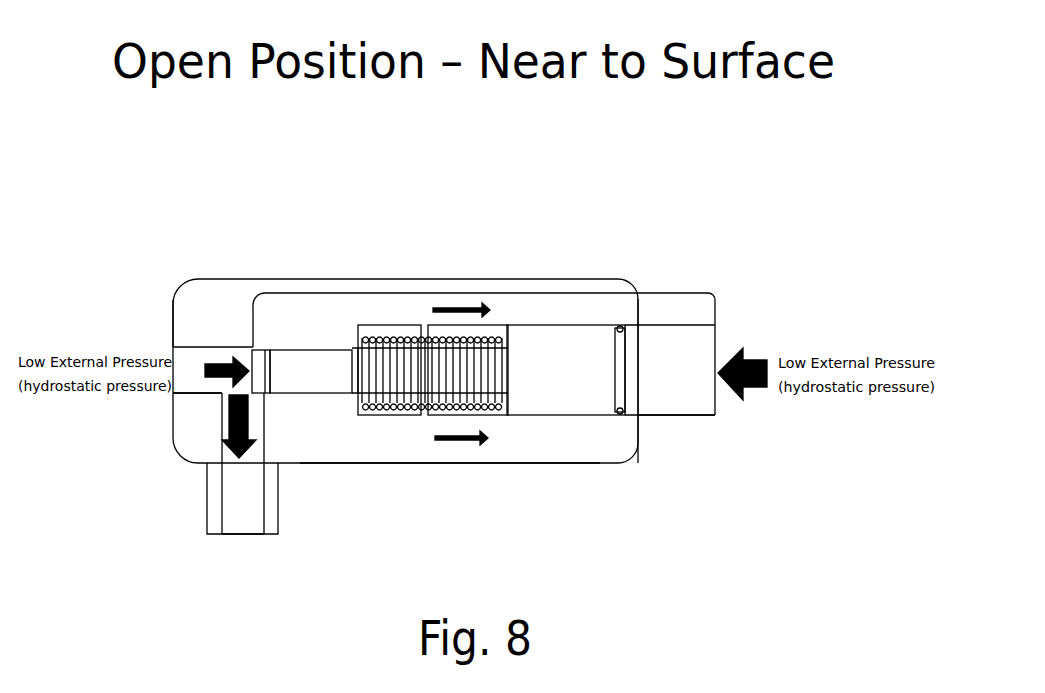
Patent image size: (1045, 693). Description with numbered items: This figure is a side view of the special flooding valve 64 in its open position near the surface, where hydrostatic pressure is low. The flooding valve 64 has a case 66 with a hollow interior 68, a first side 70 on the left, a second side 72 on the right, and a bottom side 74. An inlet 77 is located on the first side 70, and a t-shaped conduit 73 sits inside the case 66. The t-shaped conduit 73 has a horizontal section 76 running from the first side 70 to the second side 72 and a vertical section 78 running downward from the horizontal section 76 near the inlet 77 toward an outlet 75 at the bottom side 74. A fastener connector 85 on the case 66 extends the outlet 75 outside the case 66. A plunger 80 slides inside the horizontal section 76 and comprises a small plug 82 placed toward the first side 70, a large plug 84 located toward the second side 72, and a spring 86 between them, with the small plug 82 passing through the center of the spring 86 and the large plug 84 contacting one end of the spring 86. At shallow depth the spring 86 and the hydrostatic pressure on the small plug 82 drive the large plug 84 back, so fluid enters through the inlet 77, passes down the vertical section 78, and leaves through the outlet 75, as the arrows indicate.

The flooding valve 64 is at (677, 262).
The case 66 is at (325, 278).
The hollow interior 68 is at (230, 290).
The first side 70 is at (170, 312).
The second side 72 is at (642, 445).
The t-shaped conduit 73 is at (242, 345).
The bottom side 74 is at (400, 466).
The outlet 75 is at (250, 538).
The horizontal section 76 is at (192, 356).
The inlet 77 is at (173, 398).
The vertical section 78 is at (265, 450).
The plunger 80 is at (485, 295).
The small plug 82 is at (297, 372).
The large plug 84 is at (662, 405).
The fastener connector 85 is at (280, 508).
The spring 86 is at (490, 412).